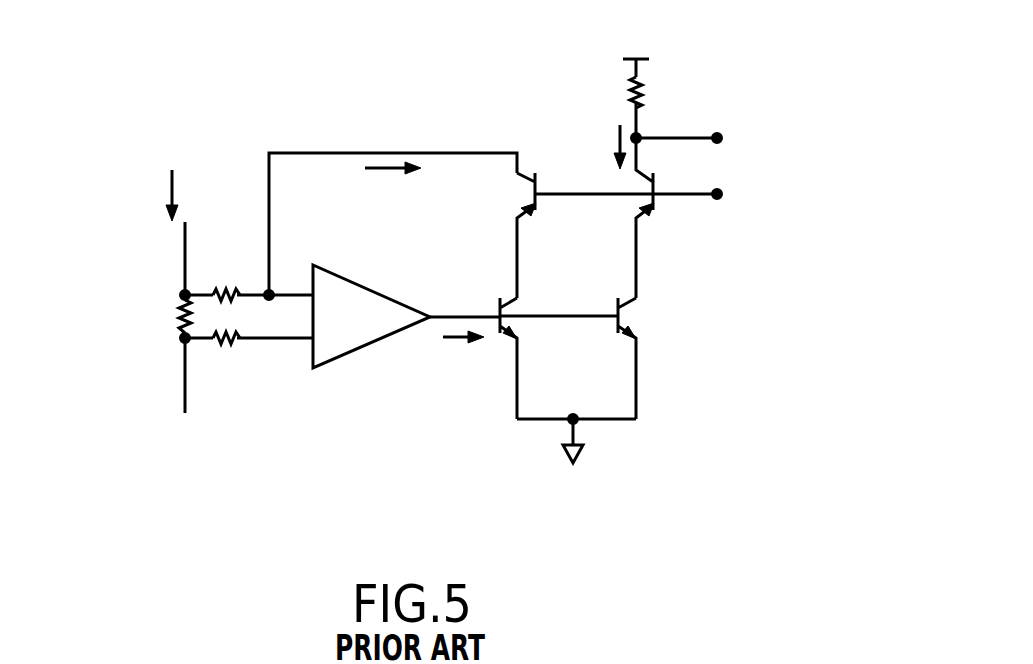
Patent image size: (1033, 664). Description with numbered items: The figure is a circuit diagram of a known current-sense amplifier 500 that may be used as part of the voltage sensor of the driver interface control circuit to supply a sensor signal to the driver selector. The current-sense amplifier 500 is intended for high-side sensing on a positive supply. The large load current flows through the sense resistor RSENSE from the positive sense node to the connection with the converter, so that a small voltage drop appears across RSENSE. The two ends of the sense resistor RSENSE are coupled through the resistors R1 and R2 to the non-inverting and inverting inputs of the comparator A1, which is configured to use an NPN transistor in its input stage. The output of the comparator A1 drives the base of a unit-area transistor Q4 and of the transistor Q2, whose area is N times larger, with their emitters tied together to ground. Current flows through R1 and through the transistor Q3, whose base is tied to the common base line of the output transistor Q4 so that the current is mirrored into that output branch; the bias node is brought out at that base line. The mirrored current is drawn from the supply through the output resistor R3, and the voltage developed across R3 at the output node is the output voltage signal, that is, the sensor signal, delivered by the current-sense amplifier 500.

The current-sense amplifier 500 is at (180, 112).
The sense resistor RSENSE is at (134, 317).
The resistor R1 is at (249, 275).
The resistor R2 is at (249, 357).
The output resistor R3 is at (655, 98).
The comparator A1 is at (371, 316).
The transistor Q2 is at (659, 358).
The transistor Q3 is at (493, 235).
The transistor Q4 is at (577, 278).